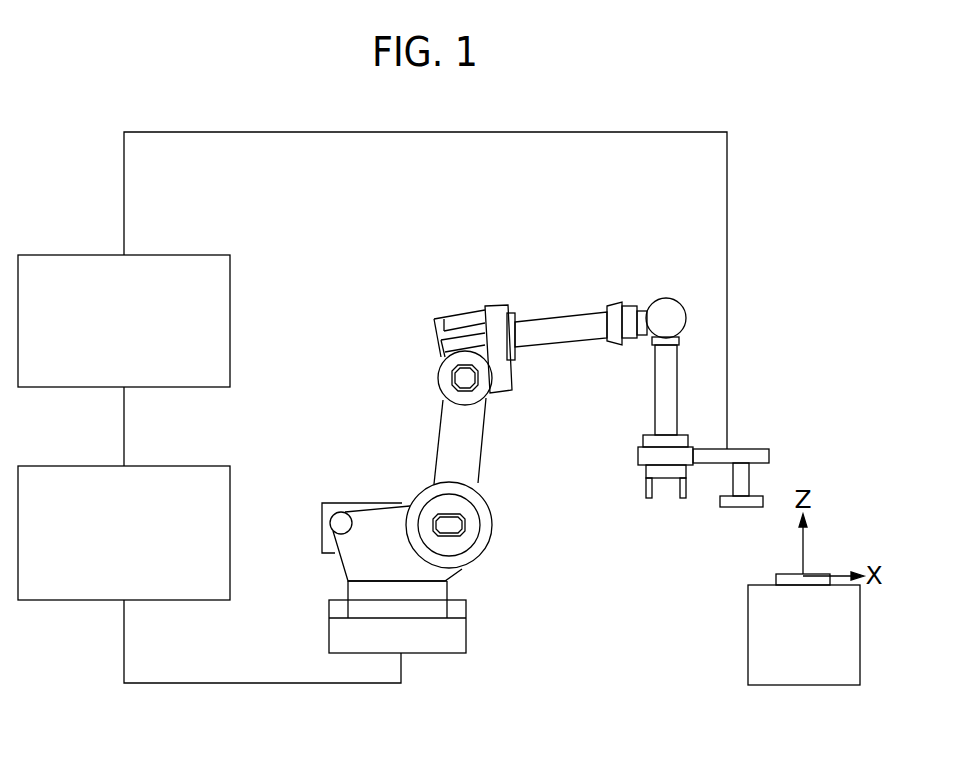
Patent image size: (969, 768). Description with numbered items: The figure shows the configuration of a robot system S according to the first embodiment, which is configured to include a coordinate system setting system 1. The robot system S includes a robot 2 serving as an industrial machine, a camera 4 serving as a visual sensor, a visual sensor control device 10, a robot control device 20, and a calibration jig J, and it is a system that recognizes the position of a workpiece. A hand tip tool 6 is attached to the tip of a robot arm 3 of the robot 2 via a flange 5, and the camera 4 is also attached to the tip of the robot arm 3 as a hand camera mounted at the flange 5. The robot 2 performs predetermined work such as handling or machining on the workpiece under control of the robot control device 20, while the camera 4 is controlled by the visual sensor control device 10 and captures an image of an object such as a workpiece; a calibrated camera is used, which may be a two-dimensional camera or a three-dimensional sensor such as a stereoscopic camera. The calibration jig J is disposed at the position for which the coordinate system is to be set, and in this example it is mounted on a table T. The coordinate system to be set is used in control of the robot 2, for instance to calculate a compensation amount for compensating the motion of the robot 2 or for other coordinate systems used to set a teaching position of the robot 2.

The robot system S is at (768, 68).
The coordinate system setting system 1 is at (781, 173).
The robot 2 is at (380, 503).
The robot arm 3 is at (655, 420).
The camera 4 is at (752, 478).
The flange 5 is at (638, 456).
The hand tip tool 6 is at (646, 488).
The visual sensor control device 10 is at (166, 256).
The robot control device 20 is at (166, 467).
The calibration jig J is at (776, 581).
The table T is at (748, 634).